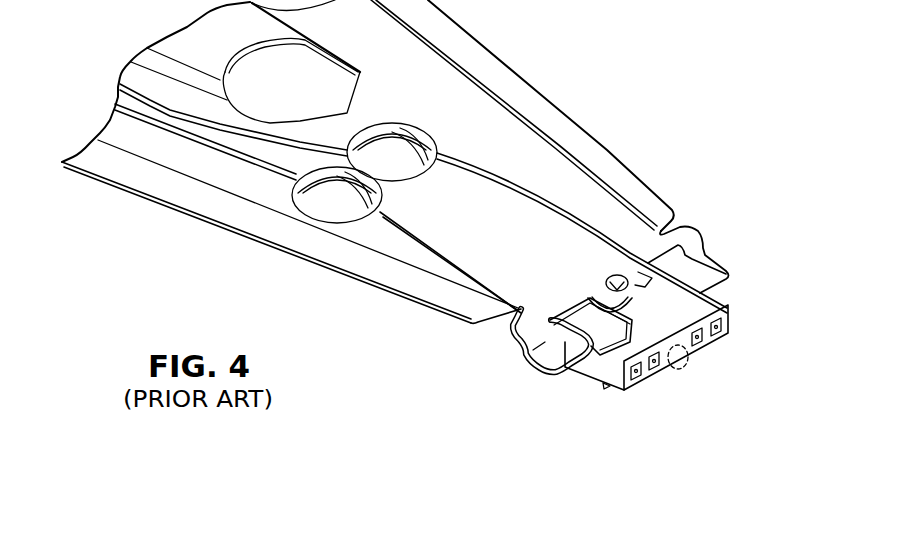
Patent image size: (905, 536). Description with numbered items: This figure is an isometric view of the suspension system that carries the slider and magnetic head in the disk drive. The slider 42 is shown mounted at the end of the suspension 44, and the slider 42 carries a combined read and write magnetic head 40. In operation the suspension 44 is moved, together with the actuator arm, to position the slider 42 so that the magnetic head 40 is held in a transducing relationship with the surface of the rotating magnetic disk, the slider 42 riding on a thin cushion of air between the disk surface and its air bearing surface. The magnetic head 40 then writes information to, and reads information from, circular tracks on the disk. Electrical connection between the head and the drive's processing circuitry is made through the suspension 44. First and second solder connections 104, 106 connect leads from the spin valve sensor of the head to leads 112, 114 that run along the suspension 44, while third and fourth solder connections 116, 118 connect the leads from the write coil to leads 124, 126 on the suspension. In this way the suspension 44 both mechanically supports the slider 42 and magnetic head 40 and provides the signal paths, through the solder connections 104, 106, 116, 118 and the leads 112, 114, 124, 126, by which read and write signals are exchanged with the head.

The magnetic head 40 is at (683, 368).
The slider 42 is at (573, 379).
The suspension 44 is at (543, 80).
The first solder connection 104 is at (635, 377).
The second solder connection 106 is at (722, 321).
The lead 112 is at (407, 232).
The lead 114 is at (590, 220).
The third solder connection 116 is at (655, 367).
The fourth solder connection 118 is at (702, 342).
The lead 124 is at (457, 250).
The lead 126 is at (512, 187).